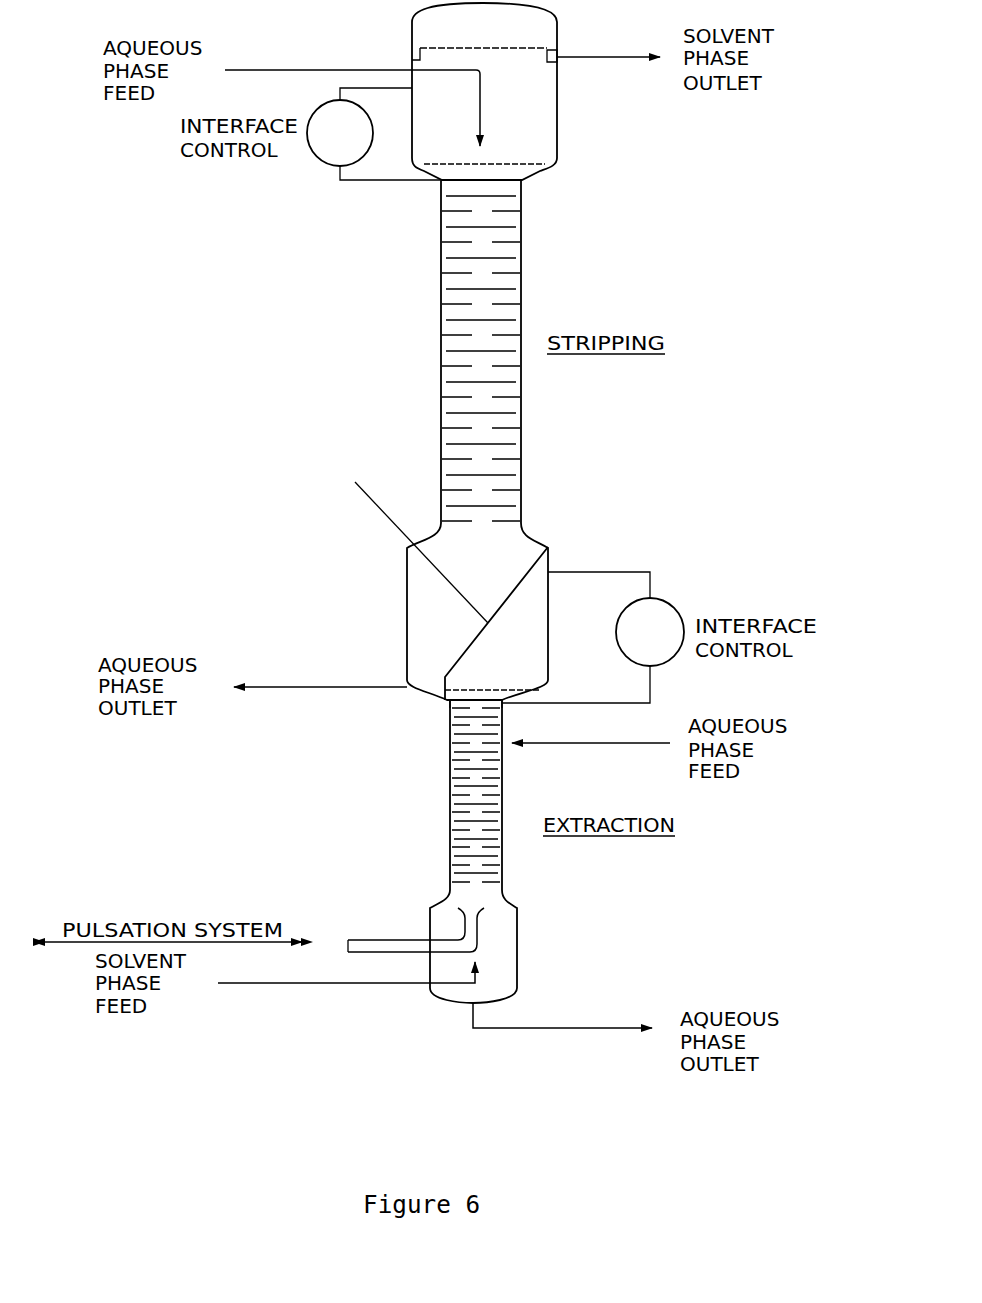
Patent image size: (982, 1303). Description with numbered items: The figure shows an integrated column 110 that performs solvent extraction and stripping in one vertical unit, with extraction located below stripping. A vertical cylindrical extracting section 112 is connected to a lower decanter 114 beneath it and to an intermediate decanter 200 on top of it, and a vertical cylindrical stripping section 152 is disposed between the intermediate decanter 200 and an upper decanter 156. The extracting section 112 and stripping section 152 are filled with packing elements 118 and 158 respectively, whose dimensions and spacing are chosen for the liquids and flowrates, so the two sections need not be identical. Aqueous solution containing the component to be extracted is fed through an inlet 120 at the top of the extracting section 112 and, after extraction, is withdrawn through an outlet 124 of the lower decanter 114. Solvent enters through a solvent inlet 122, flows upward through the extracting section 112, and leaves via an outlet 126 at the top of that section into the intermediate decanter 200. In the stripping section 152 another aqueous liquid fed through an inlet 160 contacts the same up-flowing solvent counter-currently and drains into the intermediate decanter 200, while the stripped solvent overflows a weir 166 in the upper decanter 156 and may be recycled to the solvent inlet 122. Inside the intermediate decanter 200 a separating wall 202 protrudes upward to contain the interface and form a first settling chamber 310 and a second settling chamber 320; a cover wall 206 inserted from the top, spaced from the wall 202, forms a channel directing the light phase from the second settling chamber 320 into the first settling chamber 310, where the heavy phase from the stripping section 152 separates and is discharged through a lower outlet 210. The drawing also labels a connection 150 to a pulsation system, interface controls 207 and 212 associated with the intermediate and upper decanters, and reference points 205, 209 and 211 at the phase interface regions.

The integrated column 110 is at (196, 323).
The extracting section 112 is at (450, 882).
The lower decanter 114 is at (455, 1005).
The packing elements 118 is at (482, 835).
The inlet 120 is at (593, 743).
The solvent inlet 122 is at (333, 983).
The outlet 124 is at (558, 1030).
The outlet 126 is at (452, 702).
The pulsation system pipe 150 is at (340, 933).
The stripping section 152 is at (430, 355).
The upper decanter 156 is at (568, 118).
The packing elements 158 is at (504, 429).
The inlet 160 is at (319, 62).
The weir 166 is at (566, 41).
The intermediate decanter 200 is at (399, 592).
The separating wall 202 is at (355, 482).
The neck interface 205 is at (465, 710).
The cover wall 206 is at (505, 579).
The interface level controller 207 is at (672, 590).
The interface 209 is at (521, 577).
The lower outlet 210 is at (317, 688).
The interface 211 is at (527, 167).
The interface level controller 212 is at (313, 176).
The first settling chamber 310 is at (422, 618).
The second settling chamber 320 is at (602, 640).